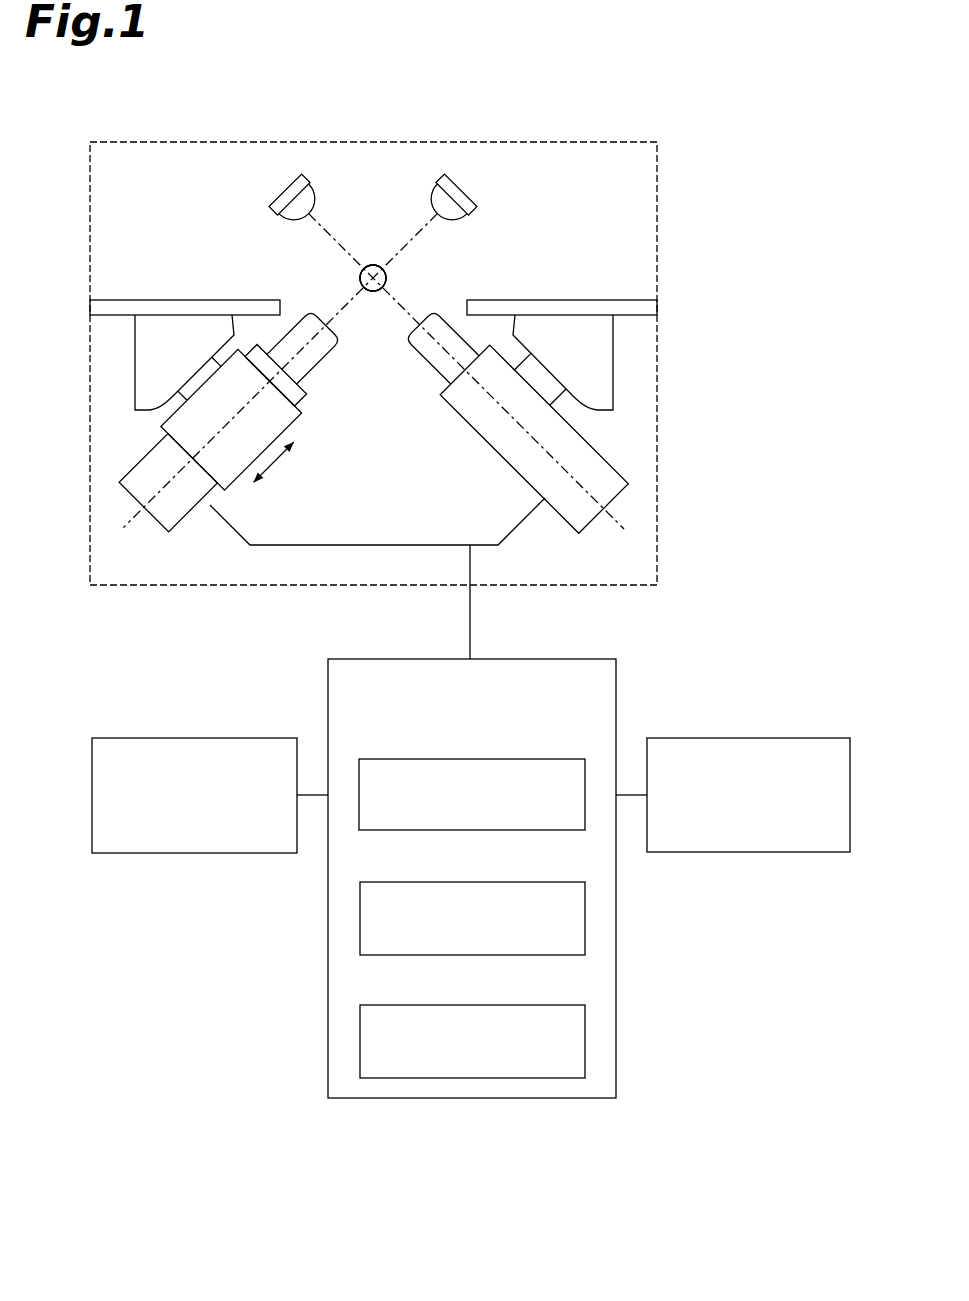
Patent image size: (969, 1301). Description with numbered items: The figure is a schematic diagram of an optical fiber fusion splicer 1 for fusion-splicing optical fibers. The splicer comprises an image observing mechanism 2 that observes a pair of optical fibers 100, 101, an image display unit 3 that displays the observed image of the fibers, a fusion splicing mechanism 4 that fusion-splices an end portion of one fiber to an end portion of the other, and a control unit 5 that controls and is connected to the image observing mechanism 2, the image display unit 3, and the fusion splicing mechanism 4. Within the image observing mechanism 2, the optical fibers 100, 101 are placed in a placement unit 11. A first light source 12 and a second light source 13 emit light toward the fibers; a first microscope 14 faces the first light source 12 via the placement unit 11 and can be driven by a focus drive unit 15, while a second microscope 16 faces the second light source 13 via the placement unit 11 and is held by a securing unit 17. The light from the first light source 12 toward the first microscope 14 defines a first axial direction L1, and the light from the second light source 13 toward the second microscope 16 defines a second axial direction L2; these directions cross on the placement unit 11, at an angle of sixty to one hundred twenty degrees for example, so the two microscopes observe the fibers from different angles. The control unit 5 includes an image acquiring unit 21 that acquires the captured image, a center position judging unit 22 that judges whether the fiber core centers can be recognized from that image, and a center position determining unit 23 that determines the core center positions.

The optical fiber fusion splicer 1 is at (821, 115).
The image observing mechanism 2 is at (663, 242).
The image display unit 3 is at (266, 738).
The fusion splicing mechanism 4 is at (828, 738).
The control unit 5 is at (592, 658).
The placement unit 11 is at (457, 279).
The optical fiber 100 is at (373, 278).
The optical fiber 101 is at (386, 279).
The first light source 12 is at (440, 186).
The second light source 13 is at (312, 190).
The first microscope 14 is at (327, 368).
The focus drive unit 15 is at (269, 380).
The second microscope 16 is at (424, 360).
The securing unit 17 is at (481, 380).
The image acquiring unit 21 is at (556, 758).
The center position judging unit 22 is at (556, 881).
The center position determining unit 23 is at (556, 1004).
The first axial direction L1 is at (410, 237).
The second axial direction L2 is at (323, 240).